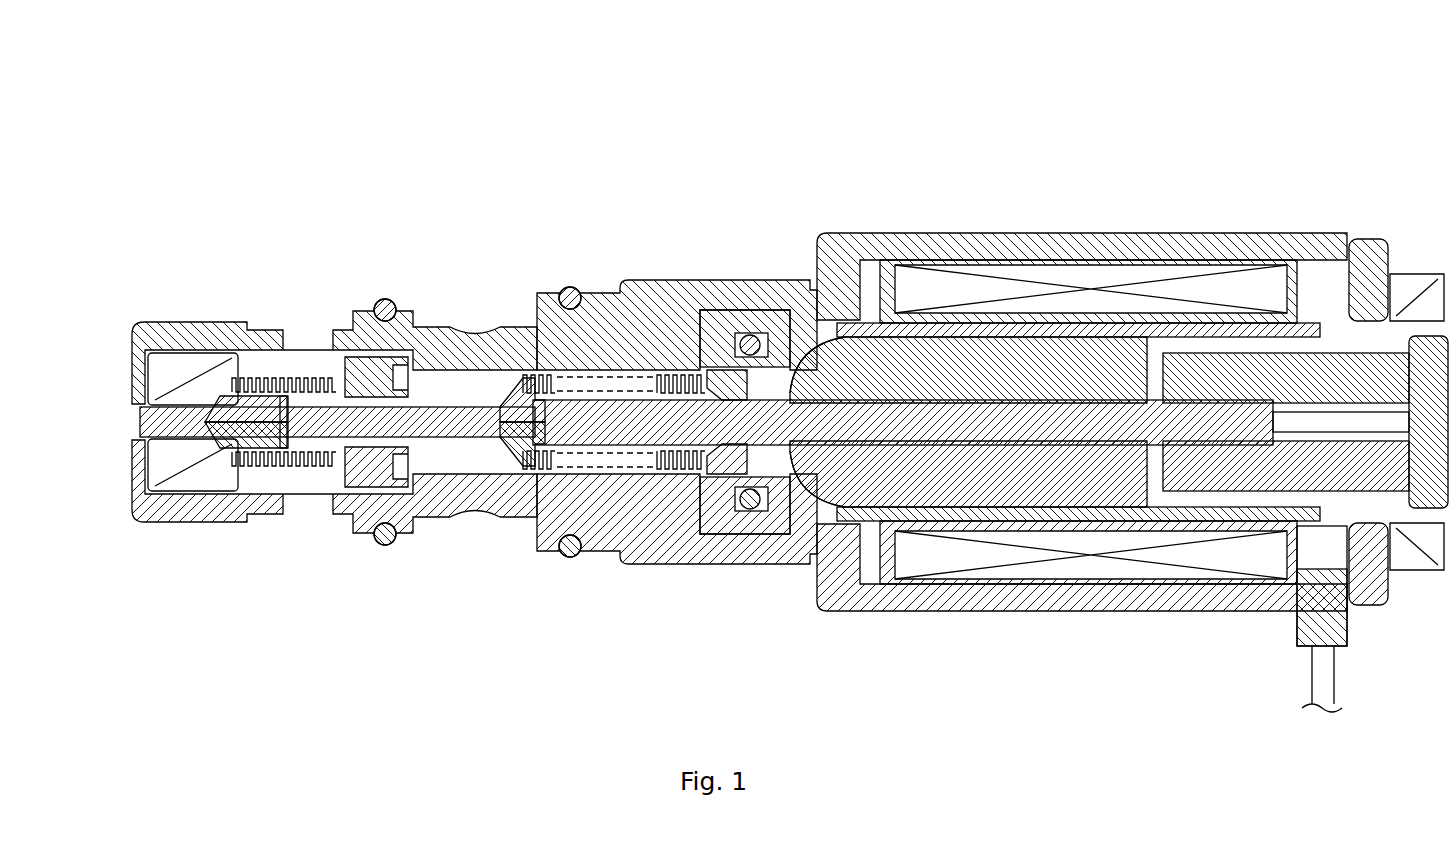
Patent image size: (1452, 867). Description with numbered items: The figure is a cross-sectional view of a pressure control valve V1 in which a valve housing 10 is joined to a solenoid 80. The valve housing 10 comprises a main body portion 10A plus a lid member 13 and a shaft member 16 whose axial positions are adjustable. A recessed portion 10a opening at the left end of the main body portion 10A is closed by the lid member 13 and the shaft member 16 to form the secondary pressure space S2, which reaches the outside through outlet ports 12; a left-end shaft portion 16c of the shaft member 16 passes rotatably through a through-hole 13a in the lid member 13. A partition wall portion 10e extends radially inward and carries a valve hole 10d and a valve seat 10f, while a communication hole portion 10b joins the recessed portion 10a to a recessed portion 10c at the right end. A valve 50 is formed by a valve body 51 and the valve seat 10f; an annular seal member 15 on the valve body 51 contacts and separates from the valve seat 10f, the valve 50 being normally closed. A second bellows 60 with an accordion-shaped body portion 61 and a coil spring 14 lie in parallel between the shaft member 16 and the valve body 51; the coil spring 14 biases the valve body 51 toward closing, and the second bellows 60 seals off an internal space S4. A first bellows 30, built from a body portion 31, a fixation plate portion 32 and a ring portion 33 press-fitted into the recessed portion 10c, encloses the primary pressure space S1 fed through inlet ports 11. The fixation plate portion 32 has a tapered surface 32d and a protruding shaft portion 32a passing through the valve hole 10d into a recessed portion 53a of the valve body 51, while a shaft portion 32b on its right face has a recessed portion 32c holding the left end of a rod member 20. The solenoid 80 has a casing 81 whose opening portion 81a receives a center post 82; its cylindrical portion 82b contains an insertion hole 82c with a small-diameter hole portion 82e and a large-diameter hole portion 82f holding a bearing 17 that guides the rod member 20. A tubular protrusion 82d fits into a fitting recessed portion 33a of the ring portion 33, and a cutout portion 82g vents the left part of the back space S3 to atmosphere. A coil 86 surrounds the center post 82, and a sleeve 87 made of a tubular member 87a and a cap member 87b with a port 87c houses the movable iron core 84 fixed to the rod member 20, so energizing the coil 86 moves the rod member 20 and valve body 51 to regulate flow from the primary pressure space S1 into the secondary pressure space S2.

The pressure control valve V1 is at (1130, 110).
The valve housing 10 is at (250, 532).
The valve housing main body portion 10A is at (158, 528).
The recessed portion 10a is at (245, 345).
The communication hole portion 10b is at (528, 335).
The recessed portion 10c is at (742, 292).
The valve hole 10d is at (442, 395).
The partition wall portion 10e is at (430, 356).
The valve seat 10f is at (385, 548).
The inlet ports 11 is at (505, 440).
The outlet ports 12 is at (306, 502).
The lid member 13 is at (162, 368).
The through-hole 13a is at (183, 392).
The coil spring 14 is at (355, 362).
The seal member 15 is at (425, 500).
The shaft member 16 is at (133, 427).
The left-end shaft portion 16c is at (202, 482).
The bearing 17 is at (858, 555).
The rod member 20 is at (1025, 560).
The first bellows 30 is at (680, 545).
The body portion 31 is at (712, 380).
The fixation plate portion 32 is at (572, 560).
The protruding shaft portion 32a is at (500, 552).
The shaft portion 32b is at (552, 385).
The recessed portion 32c is at (604, 340).
The tapered surface 32d is at (493, 395).
The ring portion 33 is at (752, 515).
The fitting recessed portion 33a is at (766, 330).
The valve 50 is at (430, 618).
The valve body 51 is at (366, 538).
The recessed portion 53a is at (378, 305).
The second bellows 60 is at (308, 380).
The body portion 61 is at (285, 400).
The solenoid 80 is at (1022, 218).
The casing 81 is at (716, 569).
The opening portion 81a is at (872, 580).
The center post 82 is at (1080, 560).
The cylindrical portion 82b is at (1183, 560).
The insertion hole 82c is at (990, 162).
The tubular protrusion 82d is at (792, 545).
The small-diameter hole portion 82e is at (957, 328).
The large-diameter hole portion 82f is at (893, 365).
The cutout portion 82g is at (843, 380).
The movable iron core 84 is at (1356, 560).
The coil 86 is at (975, 565).
The sleeve 87 is at (1345, 160).
The tubular member 87a is at (1193, 236).
The cap member 87b is at (1318, 236).
The port 87c is at (1268, 240).
The primary pressure space S1 is at (530, 560).
The secondary pressure space S2 is at (225, 545).
The back space S3 is at (630, 562).
The internal space S4 is at (278, 545).